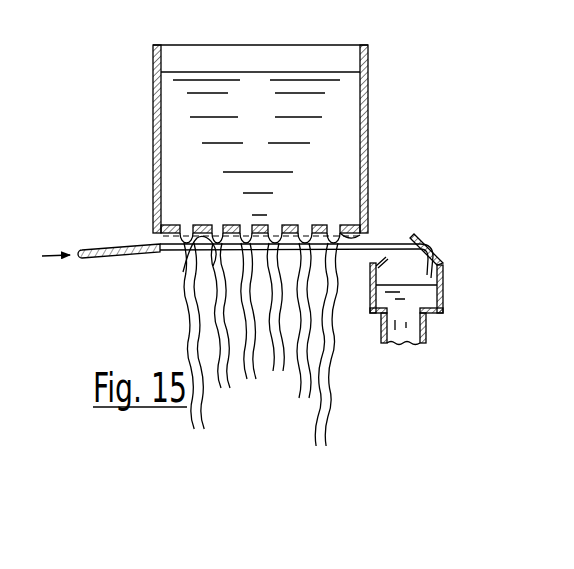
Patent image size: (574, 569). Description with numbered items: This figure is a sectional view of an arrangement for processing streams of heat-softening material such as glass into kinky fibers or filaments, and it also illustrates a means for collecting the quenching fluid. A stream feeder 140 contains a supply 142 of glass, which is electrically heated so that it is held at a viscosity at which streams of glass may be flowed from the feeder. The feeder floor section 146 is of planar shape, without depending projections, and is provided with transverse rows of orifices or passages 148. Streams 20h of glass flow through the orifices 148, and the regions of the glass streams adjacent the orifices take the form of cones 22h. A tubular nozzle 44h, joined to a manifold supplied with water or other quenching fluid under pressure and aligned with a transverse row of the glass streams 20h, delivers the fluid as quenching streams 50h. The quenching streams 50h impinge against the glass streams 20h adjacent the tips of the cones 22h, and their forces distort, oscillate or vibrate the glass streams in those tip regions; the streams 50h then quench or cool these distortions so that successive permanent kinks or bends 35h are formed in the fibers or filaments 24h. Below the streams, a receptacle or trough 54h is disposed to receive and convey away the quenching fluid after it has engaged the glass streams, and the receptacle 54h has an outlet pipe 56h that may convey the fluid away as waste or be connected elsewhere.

The stream feeder 140 is at (372, 80).
The supply of glass 142 is at (293, 76).
The orifices or passages 148 is at (220, 227).
The feeder floor section 146 is at (371, 234).
The streams of glass 20h is at (245, 237).
The cones 22h is at (207, 193).
The tubular nozzle 44h is at (85, 258).
The quenching streams 50h is at (373, 247).
The receptacle or trough 54h is at (443, 278).
The outlet pipe 56h is at (423, 335).
The kinks or bends 35h is at (197, 345).
The fibers or filaments 24h is at (308, 335).